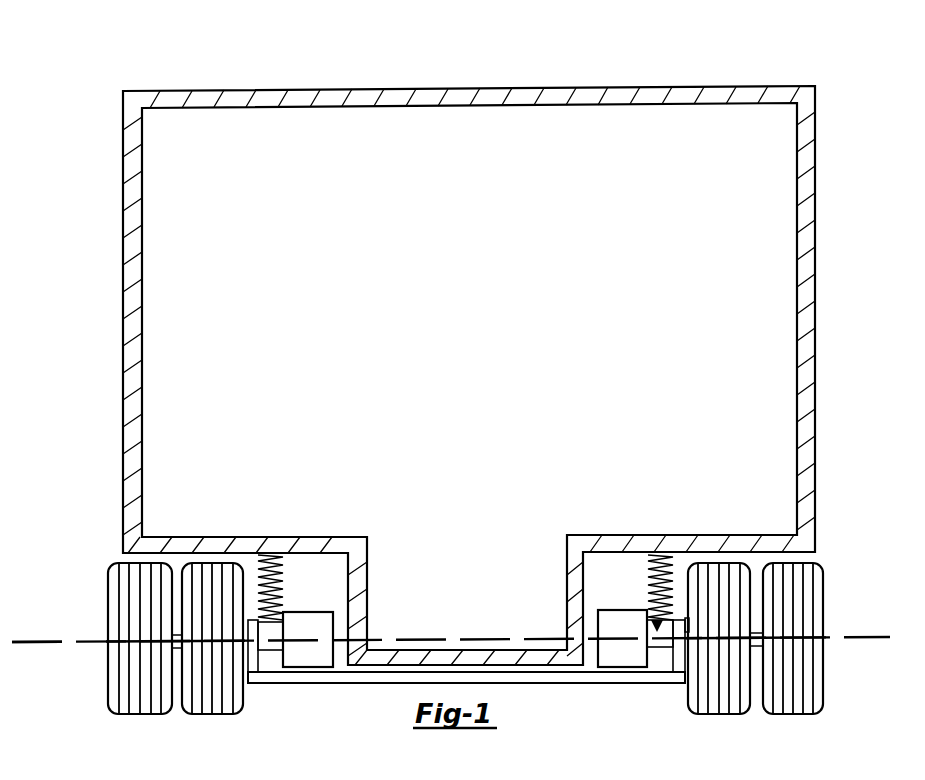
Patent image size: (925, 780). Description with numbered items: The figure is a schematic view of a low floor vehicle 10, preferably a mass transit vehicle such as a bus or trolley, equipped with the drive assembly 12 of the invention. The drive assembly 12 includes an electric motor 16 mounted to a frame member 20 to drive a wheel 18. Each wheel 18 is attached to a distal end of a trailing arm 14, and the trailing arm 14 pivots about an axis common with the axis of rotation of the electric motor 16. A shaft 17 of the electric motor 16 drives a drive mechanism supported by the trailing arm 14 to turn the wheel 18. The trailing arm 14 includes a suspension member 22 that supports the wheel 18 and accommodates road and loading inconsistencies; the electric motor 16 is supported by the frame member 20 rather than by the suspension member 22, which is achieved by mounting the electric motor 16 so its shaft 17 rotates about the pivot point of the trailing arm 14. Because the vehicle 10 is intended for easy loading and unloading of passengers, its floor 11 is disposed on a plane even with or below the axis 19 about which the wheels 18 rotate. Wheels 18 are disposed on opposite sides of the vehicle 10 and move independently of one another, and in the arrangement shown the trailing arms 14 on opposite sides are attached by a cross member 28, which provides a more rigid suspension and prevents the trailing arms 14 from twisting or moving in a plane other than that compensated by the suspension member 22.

The low floor vehicle 10 is at (724, 90).
The floor 11 is at (465, 637).
The drive assembly 12 is at (466, 692).
The trailing arm 14 is at (690, 625).
The electric motor 16 is at (598, 632).
The shaft 17 is at (657, 619).
The wheel 18 is at (145, 697).
The axis 19 is at (50, 645).
The frame member 20 is at (272, 652).
The suspension member 22 is at (268, 555).
The cross member 28 is at (345, 678).